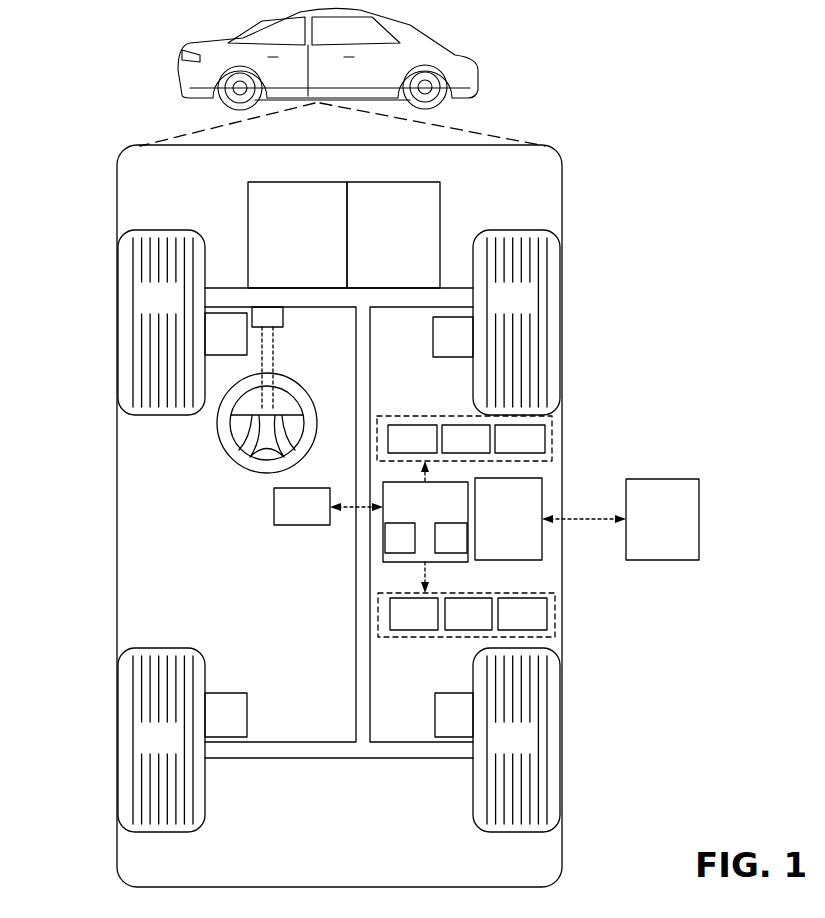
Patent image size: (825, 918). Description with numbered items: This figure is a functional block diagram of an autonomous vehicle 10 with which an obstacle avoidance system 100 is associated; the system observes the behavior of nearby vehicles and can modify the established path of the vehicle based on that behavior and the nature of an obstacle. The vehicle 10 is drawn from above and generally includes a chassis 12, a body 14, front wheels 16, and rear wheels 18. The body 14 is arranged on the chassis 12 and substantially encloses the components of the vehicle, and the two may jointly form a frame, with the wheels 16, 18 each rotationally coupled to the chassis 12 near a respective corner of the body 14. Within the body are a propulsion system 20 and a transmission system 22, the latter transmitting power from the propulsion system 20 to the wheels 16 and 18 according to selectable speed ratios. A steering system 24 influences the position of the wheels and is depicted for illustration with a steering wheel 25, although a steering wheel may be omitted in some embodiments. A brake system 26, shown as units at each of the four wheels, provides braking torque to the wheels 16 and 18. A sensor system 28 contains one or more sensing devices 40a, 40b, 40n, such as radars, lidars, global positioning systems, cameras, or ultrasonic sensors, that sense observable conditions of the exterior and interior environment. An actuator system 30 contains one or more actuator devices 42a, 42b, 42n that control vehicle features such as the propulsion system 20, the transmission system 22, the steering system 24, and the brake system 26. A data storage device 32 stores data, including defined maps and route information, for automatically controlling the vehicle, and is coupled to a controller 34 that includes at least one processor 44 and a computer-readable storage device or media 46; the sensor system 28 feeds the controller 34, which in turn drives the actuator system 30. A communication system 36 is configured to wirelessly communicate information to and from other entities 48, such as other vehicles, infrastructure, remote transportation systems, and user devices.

The vehicle 10 is at (182, 62).
The chassis 12 is at (365, 759).
The body 14 is at (117, 486).
The front wheels 16 is at (150, 309).
The rear wheels 18 is at (150, 749).
The propulsion system 20 is at (286, 251).
The transmission system 22 is at (382, 251).
The steering system 24 is at (238, 484).
The steering wheel 25 is at (302, 387).
The brake system 26 is at (215, 345).
The sensor system 28 is at (418, 416).
The actuator system 30 is at (430, 637).
The data storage device 32 is at (291, 517).
The controller 34 is at (414, 518).
The communication system 36 is at (497, 529).
The sensing device 40a is at (428, 450).
The sensing device 40b is at (482, 450).
The sensing device 40n is at (536, 450).
The actuator device 42a is at (430, 625).
The actuator device 42b is at (484, 625).
The actuator device 42n is at (538, 625).
The processor 44 is at (389, 549).
The computer-readable storage device or media 46 is at (440, 549).
The other entities 48 is at (651, 529).
The obstacle avoidance system 100 is at (589, 353).